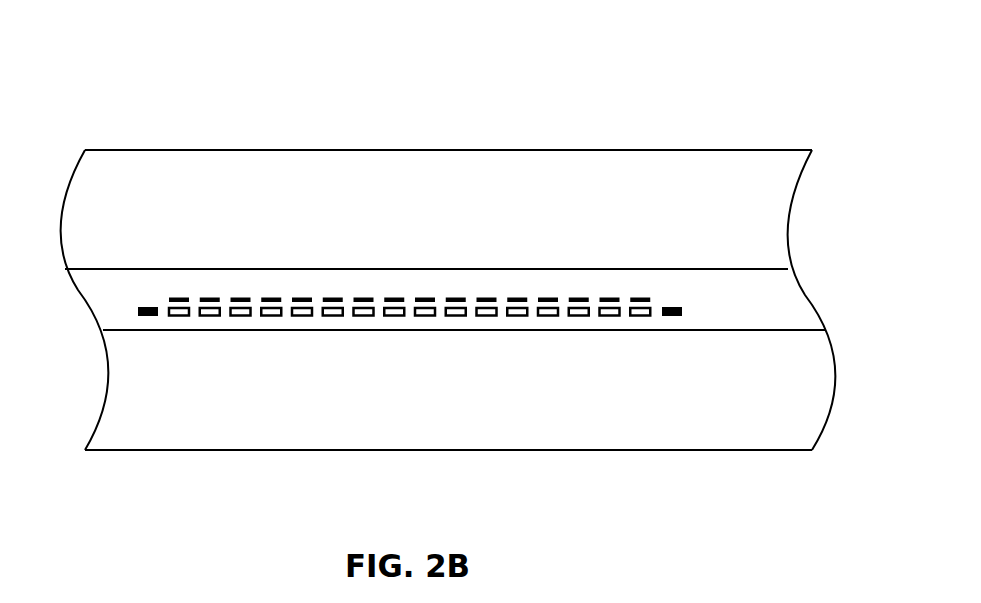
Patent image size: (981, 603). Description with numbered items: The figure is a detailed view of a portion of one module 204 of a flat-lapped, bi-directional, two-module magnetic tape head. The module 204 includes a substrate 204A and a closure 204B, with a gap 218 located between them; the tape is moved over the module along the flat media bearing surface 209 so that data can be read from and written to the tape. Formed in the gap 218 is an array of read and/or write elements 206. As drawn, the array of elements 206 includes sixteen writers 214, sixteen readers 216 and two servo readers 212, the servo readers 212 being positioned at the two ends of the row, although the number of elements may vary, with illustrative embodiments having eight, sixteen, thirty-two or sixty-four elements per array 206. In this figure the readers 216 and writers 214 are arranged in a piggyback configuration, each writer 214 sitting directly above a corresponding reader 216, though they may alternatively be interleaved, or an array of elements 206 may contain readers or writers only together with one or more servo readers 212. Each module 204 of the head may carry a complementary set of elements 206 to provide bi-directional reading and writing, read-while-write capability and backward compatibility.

The module 204 is at (100, 125).
The substrate 204A is at (207, 150).
The closure 204B is at (268, 450).
The media bearing surface 209 is at (362, 230).
The read and/or write elements 206 is at (699, 297).
The servo readers 212 is at (138, 310).
The writers 214 is at (546, 297).
The readers 216 is at (548, 317).
The gap 218 is at (812, 297).